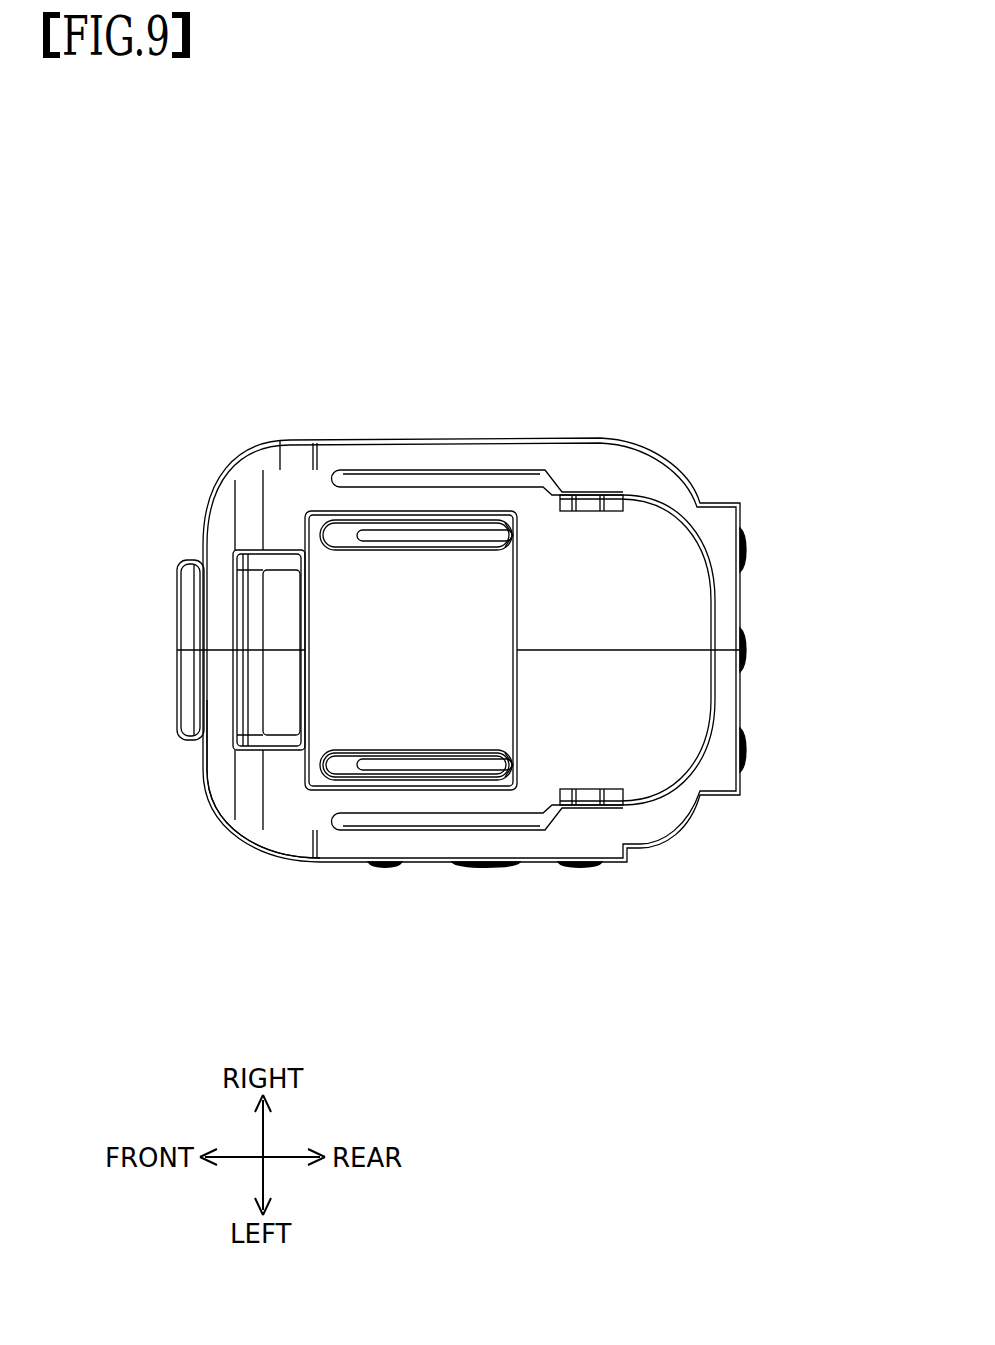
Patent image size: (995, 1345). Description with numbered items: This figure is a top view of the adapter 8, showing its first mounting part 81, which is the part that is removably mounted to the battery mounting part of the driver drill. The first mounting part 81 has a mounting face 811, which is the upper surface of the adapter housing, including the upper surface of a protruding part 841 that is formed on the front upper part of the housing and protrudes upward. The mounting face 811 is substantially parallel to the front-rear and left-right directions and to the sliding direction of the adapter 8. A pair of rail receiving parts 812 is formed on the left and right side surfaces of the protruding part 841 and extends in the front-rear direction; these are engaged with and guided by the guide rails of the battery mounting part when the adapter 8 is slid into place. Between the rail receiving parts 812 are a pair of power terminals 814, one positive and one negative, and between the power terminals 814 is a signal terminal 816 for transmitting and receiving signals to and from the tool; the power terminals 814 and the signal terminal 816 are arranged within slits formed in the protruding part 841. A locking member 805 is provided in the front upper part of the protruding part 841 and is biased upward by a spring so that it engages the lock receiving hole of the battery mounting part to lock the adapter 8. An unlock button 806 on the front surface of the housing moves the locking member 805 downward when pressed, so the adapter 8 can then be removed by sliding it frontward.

The adapter 8 is at (464, 625).
The first mounting part 81 is at (663, 423).
The locking member 805 is at (268, 650).
The unlock button 806 is at (190, 705).
The mounting face 811 is at (560, 625).
The rail receiving parts 812 is at (490, 482).
The power terminals 814 is at (417, 540).
The signal terminal 816 is at (435, 722).
The protruding part 841 is at (298, 800).